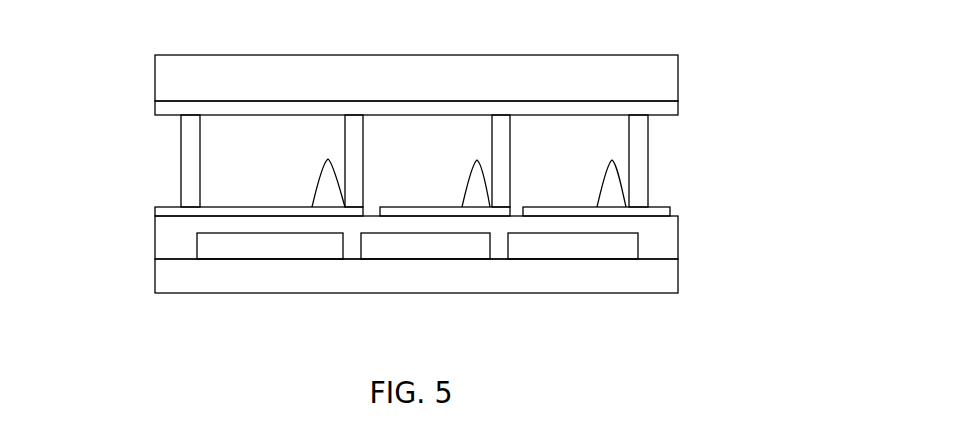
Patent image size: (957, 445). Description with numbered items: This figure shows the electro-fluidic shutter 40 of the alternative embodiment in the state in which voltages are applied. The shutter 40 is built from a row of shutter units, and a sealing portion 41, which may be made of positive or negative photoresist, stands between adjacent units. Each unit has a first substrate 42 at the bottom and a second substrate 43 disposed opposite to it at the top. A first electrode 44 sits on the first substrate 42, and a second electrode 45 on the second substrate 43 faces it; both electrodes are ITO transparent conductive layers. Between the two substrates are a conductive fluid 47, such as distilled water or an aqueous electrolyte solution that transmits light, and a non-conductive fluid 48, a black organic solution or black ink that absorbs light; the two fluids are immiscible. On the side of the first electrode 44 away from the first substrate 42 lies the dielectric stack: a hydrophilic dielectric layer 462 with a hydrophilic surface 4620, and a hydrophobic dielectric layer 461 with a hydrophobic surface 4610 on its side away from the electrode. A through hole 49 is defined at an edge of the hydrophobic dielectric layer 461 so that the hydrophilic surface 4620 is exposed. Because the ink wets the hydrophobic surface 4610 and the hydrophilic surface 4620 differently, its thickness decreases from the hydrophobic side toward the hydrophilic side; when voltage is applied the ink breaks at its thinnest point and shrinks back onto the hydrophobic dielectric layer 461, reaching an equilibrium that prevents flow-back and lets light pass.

The electro-fluidic shutter 40 is at (409, 150).
The sealing portion 41 is at (648, 159).
The first substrate 42 is at (678, 286).
The second substrate 43 is at (678, 66).
The first electrode 44 is at (235, 248).
The second electrode 45 is at (678, 107).
The conductive fluid 47 is at (275, 154).
The non-conductive fluid 48 is at (313, 177).
The through hole 49 is at (215, 209).
The hydrophobic dielectric layer 461 is at (647, 211).
The hydrophilic dielectric layer 462 is at (678, 247).
The hydrophobic surface 4610 is at (255, 206).
The hydrophilic surface 4620 is at (215, 215).